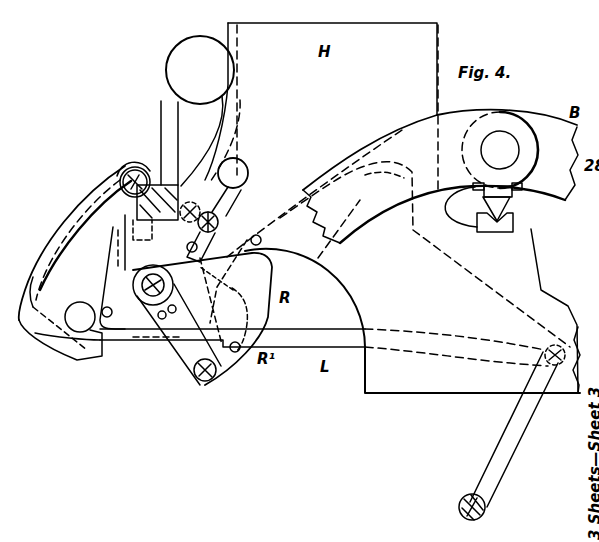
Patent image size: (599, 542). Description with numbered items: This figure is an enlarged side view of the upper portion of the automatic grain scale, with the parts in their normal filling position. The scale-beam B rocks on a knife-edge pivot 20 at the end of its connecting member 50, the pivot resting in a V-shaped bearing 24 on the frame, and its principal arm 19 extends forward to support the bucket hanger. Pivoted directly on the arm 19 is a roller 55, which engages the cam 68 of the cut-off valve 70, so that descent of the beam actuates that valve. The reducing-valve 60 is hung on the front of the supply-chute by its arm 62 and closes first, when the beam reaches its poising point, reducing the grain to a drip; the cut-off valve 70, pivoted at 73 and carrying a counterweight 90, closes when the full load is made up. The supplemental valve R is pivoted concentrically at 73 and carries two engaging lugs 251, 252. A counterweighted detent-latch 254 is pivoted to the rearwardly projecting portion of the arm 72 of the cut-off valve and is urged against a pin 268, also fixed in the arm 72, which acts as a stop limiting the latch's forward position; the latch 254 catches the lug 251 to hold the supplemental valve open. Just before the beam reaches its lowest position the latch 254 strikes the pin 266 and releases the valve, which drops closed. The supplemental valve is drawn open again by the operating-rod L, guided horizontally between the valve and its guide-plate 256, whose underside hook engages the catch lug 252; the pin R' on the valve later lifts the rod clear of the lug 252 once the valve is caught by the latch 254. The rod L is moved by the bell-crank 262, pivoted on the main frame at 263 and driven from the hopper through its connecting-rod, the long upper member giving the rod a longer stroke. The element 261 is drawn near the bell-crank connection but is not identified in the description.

The principal arm 19 is at (384, 185).
The knife-edge pivot 20 is at (509, 194).
The V-shaped bearing 24 is at (515, 224).
The connecting member 50 is at (516, 116).
The roller 55 is at (178, 204).
The reducing-valve 60 is at (59, 333).
The arm 62 is at (75, 243).
The cam 68 is at (190, 165).
The cut-off valve 70 is at (268, 312).
The arm 72 is at (160, 116).
The pivot 73 is at (86, 277).
The counterweight 90 is at (200, 70).
The engaging lug 251 is at (205, 276).
The engaging lug 252 is at (197, 376).
The detent-latch 254 is at (219, 221).
The guide-plate 256 is at (158, 353).
The pivot pin 261 is at (548, 351).
The bell-crank 262 is at (526, 424).
The pivot 263 is at (463, 498).
The pin 266 is at (262, 241).
The pin 268 is at (177, 325).